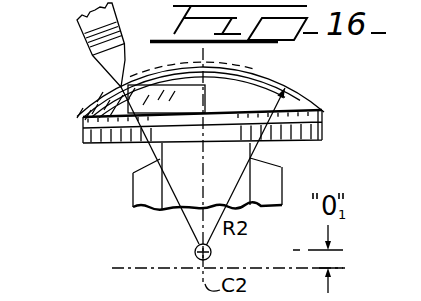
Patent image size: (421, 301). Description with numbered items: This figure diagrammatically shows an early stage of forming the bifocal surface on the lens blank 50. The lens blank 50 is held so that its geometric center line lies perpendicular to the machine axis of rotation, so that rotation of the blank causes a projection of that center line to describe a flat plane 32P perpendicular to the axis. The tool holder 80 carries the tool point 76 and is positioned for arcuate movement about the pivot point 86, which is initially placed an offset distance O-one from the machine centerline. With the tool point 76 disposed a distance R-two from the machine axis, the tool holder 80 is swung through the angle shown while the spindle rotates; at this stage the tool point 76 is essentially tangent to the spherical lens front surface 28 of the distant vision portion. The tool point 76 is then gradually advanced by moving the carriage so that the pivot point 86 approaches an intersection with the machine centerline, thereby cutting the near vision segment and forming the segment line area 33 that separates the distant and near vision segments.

The tool holder 80 is at (81, 23).
The tool point 76 is at (103, 62).
The segment line area 33 is at (108, 101).
The spherical lens front surface 28 is at (253, 71).
The lens blank 50 is at (344, 131).
The flat plane 32P is at (203, 173).
The pivot point 86 is at (195, 252).